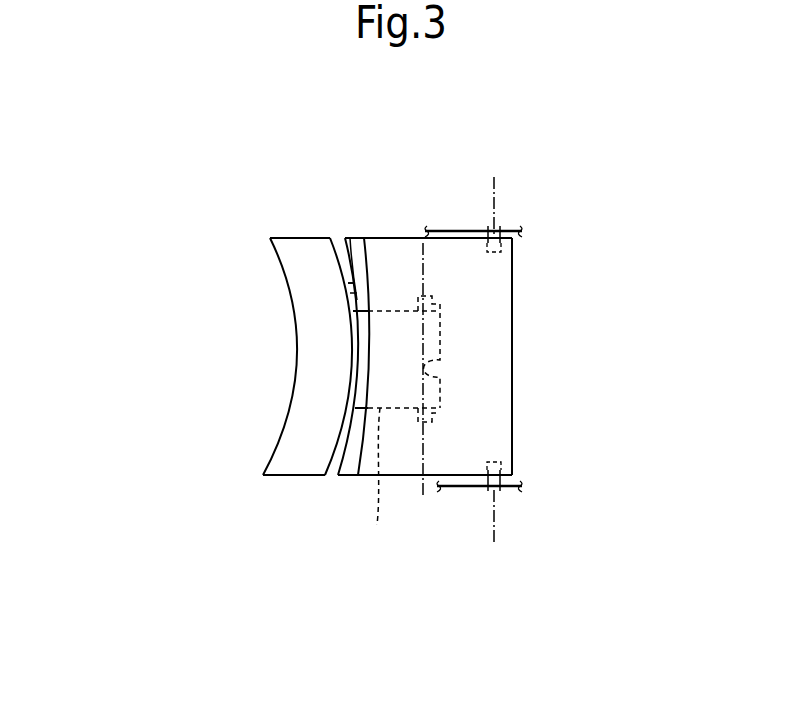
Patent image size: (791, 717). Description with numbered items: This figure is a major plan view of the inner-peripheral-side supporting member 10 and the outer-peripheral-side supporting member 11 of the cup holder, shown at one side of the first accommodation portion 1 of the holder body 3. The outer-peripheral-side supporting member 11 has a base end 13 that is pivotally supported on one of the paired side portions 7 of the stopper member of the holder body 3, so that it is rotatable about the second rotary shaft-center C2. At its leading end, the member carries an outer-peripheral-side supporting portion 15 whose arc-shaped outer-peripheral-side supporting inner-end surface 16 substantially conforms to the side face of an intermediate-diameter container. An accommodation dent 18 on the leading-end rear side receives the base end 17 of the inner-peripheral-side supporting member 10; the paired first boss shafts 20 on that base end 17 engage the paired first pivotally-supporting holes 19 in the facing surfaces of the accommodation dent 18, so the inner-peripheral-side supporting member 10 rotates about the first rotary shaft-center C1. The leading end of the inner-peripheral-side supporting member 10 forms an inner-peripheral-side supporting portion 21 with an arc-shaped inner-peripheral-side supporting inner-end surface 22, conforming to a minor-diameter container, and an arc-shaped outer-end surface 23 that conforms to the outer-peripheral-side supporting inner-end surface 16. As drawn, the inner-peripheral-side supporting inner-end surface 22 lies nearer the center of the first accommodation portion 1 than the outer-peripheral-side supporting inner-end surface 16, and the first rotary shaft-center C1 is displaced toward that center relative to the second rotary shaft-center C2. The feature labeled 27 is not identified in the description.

The first accommodation portion 1 is at (100, 367).
The holder body 3 is at (530, 213).
The side portions 7 is at (515, 220).
The inner-peripheral-side supporting member 10 is at (307, 223).
The outer-peripheral-side supporting member 11 is at (517, 333).
The base end 13 is at (493, 357).
The outer-peripheral-side supporting portion 15 is at (357, 481).
The outer-peripheral-side supporting inner-end surface 16 is at (352, 293).
The base end 17 is at (376, 483).
The accommodation dent 18 is at (440, 378).
The first pivotally-supporting holes 19 is at (440, 304).
The first boss shafts 20 is at (433, 414).
The inner-peripheral-side supporting portion 21 is at (290, 473).
The inner-peripheral-side supporting inner-end surface 22 is at (296, 357).
The arc-shaped outer-end surface 23 is at (357, 298).
The gap 27 is at (327, 480).
The first rotary shaft-center C1 is at (424, 489).
The second rotary shaft-center C2 is at (494, 530).